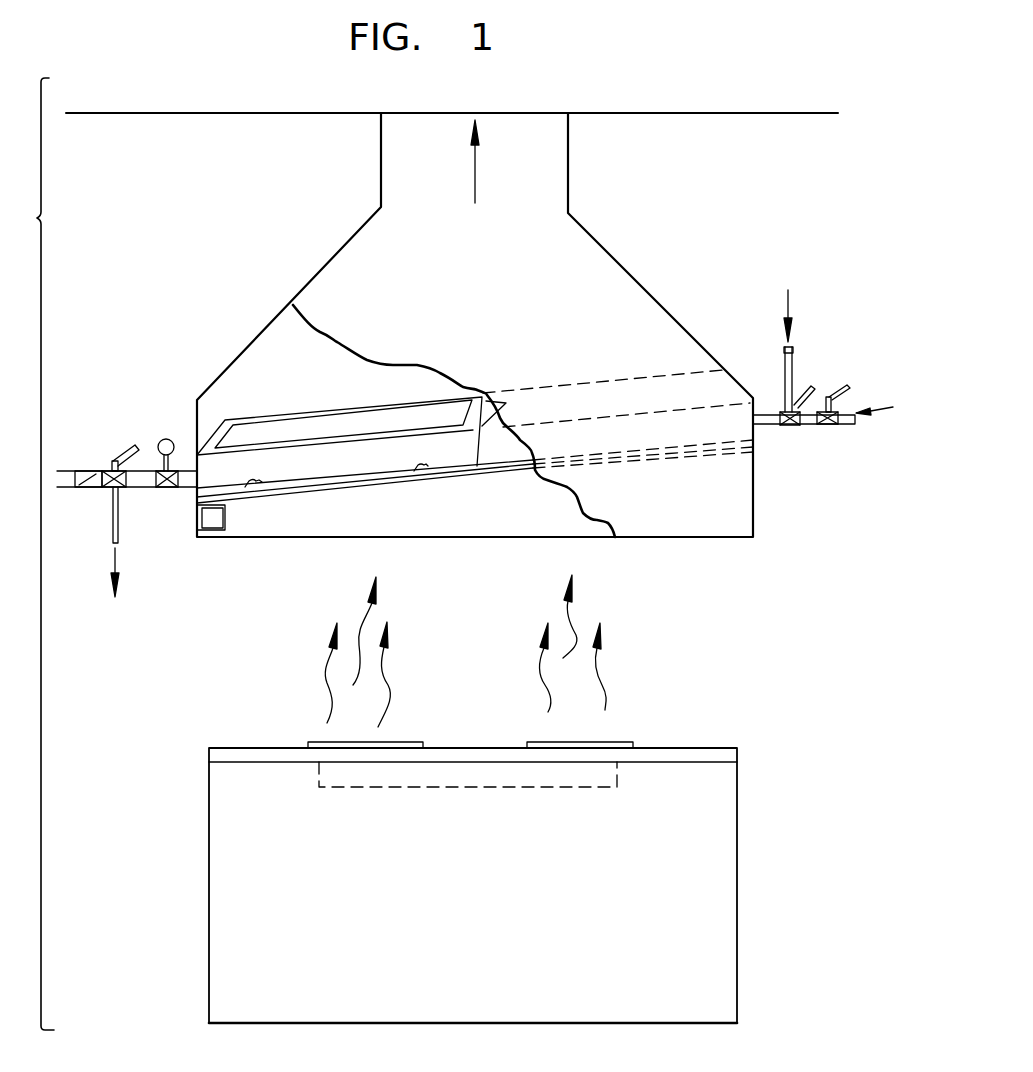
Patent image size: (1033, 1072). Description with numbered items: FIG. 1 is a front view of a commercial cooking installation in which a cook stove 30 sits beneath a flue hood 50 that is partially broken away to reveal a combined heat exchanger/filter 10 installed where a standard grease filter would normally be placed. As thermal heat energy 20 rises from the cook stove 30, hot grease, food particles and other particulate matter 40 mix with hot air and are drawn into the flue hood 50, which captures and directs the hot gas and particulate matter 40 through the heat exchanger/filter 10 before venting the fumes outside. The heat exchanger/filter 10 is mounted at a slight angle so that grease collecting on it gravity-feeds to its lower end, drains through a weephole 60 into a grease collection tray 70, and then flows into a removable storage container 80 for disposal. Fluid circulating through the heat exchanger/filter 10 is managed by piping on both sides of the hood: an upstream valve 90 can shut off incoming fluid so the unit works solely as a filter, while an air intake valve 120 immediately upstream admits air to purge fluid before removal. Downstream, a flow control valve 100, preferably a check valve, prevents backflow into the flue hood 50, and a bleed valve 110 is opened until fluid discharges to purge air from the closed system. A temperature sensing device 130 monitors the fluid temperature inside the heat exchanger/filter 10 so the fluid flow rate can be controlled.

The heat exchanger/filter 10 is at (352, 475).
The thermal heat energy 20 is at (617, 787).
The cook stove 30 is at (740, 823).
The particulate matter 40 is at (604, 677).
The flue hood 50 is at (620, 226).
The weephole 60 is at (263, 481).
The grease collection tray 70 is at (395, 508).
The removable storage container 80 is at (217, 518).
The upstream valve 90 is at (820, 441).
The flow control valve 100 is at (90, 477).
The bleed valve 110 is at (108, 440).
The air intake valve 120 is at (803, 378).
The temperature sensing device 130 is at (174, 418).